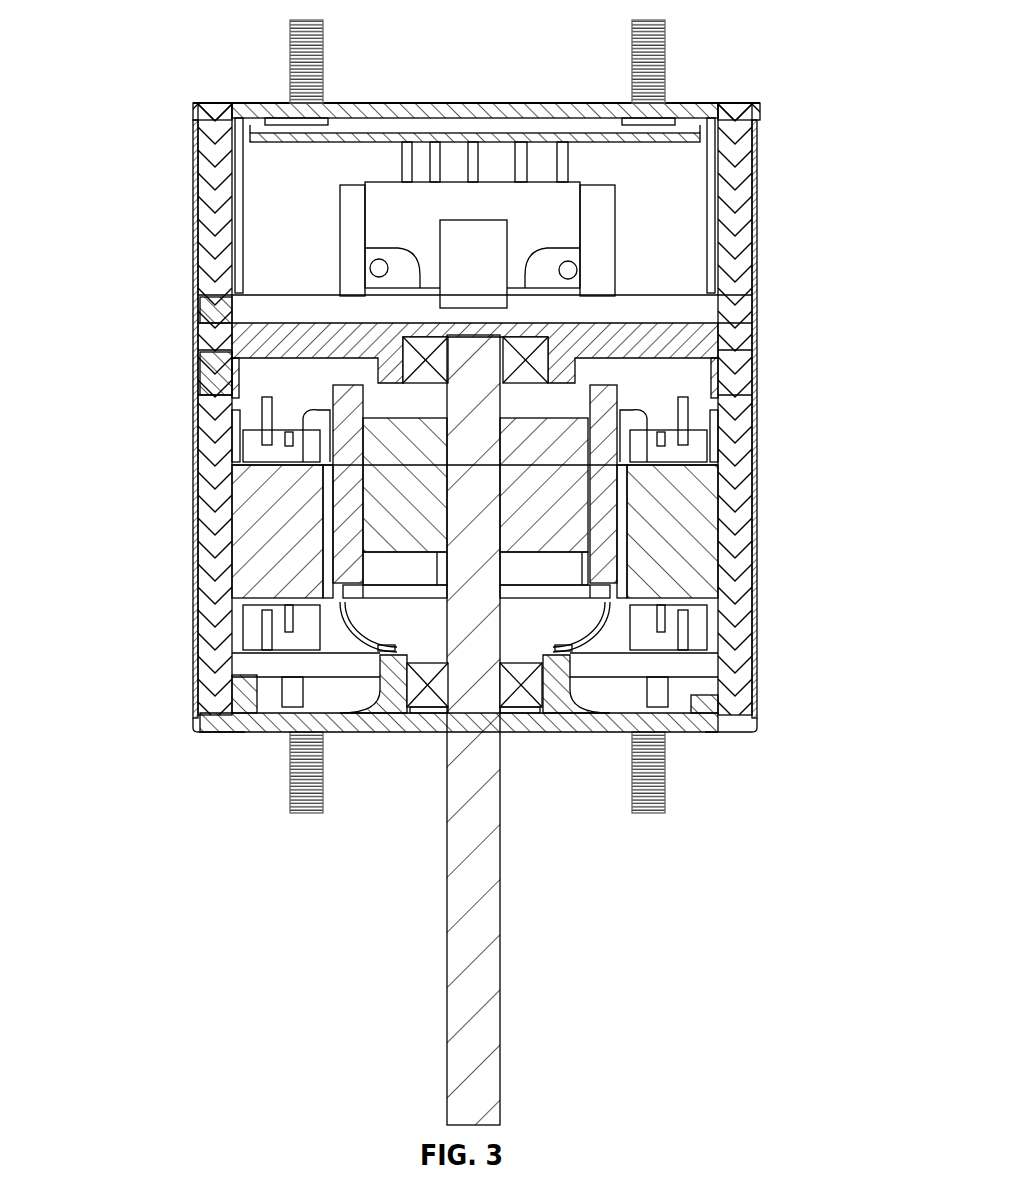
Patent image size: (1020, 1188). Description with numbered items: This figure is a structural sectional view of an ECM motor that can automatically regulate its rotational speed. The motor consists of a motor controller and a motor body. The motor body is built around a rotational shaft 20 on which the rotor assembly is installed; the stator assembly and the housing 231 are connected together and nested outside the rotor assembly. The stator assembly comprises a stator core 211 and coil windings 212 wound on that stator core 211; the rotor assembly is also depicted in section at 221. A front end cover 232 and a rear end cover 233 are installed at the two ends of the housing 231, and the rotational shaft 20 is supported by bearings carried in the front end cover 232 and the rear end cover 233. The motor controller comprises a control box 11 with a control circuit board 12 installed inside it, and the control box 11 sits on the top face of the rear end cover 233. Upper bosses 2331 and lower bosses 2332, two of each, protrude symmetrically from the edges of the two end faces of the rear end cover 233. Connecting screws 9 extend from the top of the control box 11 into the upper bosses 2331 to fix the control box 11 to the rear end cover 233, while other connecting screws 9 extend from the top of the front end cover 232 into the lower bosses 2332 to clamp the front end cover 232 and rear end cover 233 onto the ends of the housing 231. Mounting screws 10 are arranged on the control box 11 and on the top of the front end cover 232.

The connecting screws 9 is at (218, 220).
The mounting screws 10 is at (648, 68).
The control box 11 is at (490, 110).
The control circuit board 12 is at (297, 135).
The rotational shaft 20 is at (462, 840).
The stator core 211 is at (677, 545).
The coil windings 212 is at (672, 452).
The rotor core 221 is at (400, 512).
The housing 231 is at (197, 528).
The front end cover 232 is at (282, 727).
The rear end cover 233 is at (672, 332).
The upper bosses 2331 is at (210, 315).
The lower bosses 2332 is at (205, 375).